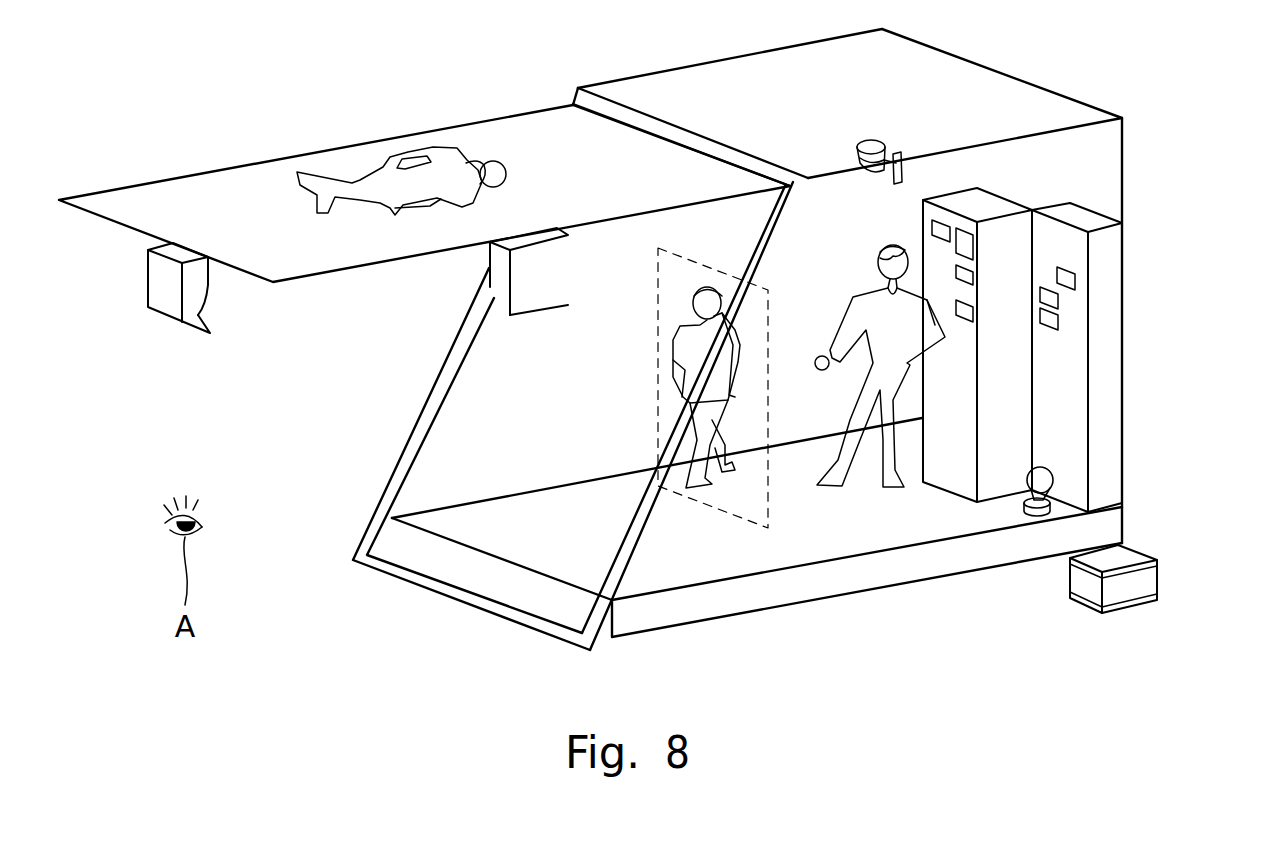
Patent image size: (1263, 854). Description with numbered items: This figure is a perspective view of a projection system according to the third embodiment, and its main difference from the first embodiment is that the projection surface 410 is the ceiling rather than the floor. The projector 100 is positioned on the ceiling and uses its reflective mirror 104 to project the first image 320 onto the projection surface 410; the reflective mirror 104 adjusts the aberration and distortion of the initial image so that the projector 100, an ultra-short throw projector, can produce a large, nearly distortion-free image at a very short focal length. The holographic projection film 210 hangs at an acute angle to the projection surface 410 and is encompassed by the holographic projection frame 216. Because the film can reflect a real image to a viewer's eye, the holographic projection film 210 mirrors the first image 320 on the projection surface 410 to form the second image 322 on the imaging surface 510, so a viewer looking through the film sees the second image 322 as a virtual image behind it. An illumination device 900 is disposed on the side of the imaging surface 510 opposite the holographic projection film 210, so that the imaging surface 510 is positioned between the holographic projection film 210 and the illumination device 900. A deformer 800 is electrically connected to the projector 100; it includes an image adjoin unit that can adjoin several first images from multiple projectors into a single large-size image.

The projector 100 is at (309, 321).
The reflective mirror 104 is at (224, 318).
The holographic projection film 210 is at (546, 425).
The holographic projection frame 216 is at (638, 576).
The first image 320 is at (396, 152).
The second image 322 is at (740, 360).
The projection surface 410 is at (232, 164).
The imaging surface 510 is at (702, 250).
The deformer 800 is at (1158, 582).
The illumination device 900 is at (1053, 495).